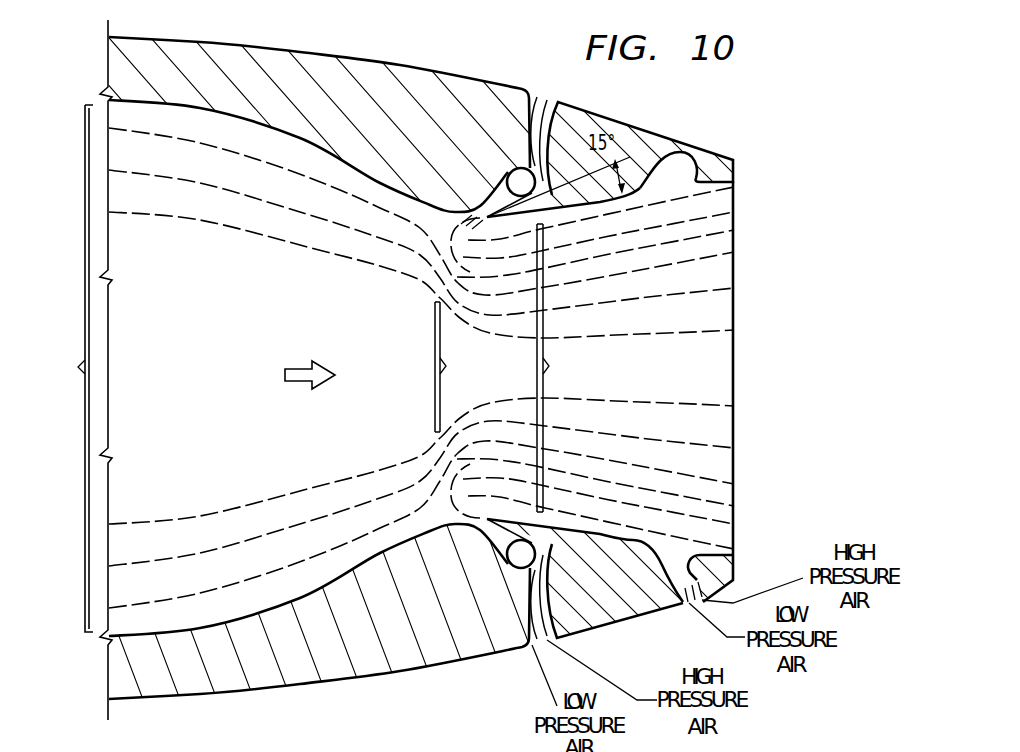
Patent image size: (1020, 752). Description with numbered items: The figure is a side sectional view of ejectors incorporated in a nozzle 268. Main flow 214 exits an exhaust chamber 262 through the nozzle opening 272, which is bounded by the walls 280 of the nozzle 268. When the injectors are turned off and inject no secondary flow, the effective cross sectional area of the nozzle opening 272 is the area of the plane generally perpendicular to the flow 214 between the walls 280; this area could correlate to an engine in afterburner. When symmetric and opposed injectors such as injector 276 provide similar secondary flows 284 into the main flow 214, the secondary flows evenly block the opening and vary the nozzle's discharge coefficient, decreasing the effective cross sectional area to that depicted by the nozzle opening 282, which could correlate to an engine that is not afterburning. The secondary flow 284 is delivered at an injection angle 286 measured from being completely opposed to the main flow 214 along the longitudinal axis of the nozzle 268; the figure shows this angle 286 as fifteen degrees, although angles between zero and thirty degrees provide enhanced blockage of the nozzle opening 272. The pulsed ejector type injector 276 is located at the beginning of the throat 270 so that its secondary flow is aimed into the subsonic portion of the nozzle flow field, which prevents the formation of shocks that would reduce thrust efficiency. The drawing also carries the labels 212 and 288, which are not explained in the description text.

The nozzle inlet section 212 is at (65, 368).
The flow 214 is at (297, 368).
The exhaust chamber 262 is at (212, 382).
The nozzle 268 is at (740, 125).
The throat 270 is at (449, 196).
The nozzle opening 272 is at (564, 368).
The injector 276 is at (494, 568).
The walls 280 is at (644, 188).
The nozzle opening 282 is at (462, 367).
The secondary flow 284 is at (489, 213).
The injection angle 286 is at (623, 192).
The throat 288 is at (456, 526).